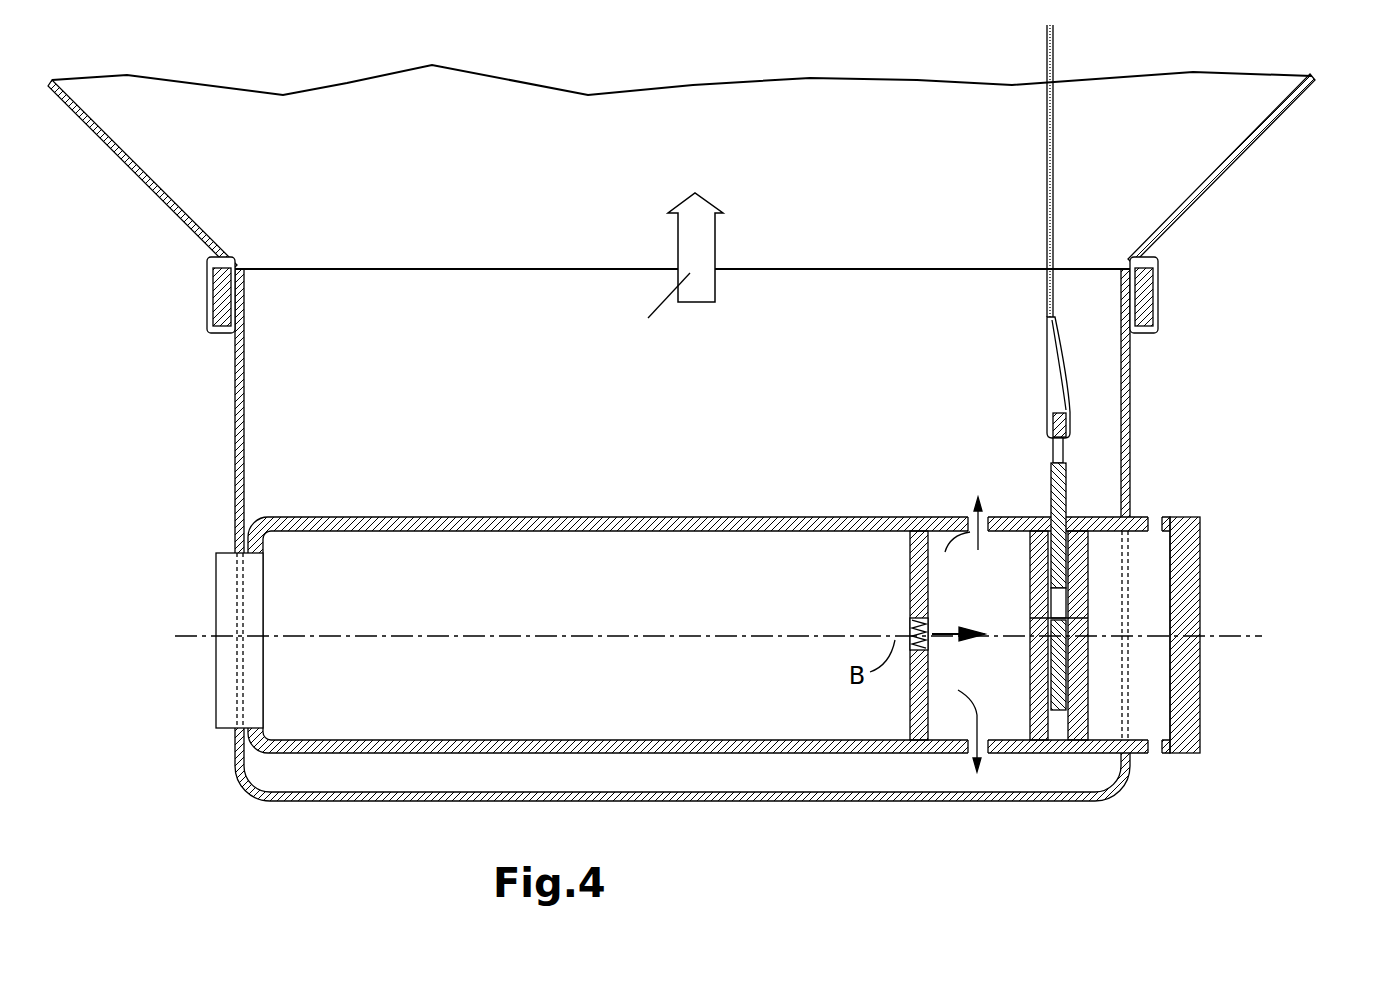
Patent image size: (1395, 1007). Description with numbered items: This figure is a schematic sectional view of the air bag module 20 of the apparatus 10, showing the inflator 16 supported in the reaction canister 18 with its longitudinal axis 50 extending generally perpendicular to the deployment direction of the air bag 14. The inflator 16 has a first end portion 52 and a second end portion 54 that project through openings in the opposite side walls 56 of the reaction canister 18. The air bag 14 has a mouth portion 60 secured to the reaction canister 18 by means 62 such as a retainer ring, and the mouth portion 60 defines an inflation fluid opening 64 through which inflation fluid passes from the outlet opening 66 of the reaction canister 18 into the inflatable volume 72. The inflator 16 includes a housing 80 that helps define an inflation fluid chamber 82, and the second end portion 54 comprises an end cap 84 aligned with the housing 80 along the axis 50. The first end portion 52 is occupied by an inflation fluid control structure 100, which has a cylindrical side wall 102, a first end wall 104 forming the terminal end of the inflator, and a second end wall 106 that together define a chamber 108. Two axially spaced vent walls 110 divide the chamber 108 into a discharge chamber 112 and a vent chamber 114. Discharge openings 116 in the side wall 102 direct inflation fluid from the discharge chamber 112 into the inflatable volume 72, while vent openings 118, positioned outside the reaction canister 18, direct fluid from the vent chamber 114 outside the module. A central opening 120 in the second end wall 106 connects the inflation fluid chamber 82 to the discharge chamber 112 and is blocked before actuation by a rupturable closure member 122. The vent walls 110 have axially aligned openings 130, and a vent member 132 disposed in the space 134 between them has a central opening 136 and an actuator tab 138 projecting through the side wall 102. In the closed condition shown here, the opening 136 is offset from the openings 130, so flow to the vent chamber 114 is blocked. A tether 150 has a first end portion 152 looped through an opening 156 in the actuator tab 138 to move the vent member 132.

The apparatus 10 is at (1273, 239).
The air bag 14 is at (162, 193).
The inflator 16 is at (511, 471).
The reaction canister 18 is at (235, 420).
The air bag module 20 is at (1310, 277).
The longitudinal axis 50 is at (182, 642).
The first end portion 52 is at (1189, 787).
The second end portion 54 is at (294, 497).
The side walls 56 is at (235, 470).
The mouth portion 60 is at (222, 250).
The means 62 is at (207, 302).
The inflation fluid opening 64 is at (606, 266).
The outlet opening 66 is at (417, 293).
The inflatable volume 72 is at (557, 214).
The housing 80 is at (640, 525).
The inflation fluid chamber 82 is at (612, 601).
The end cap 84 is at (224, 708).
The inflation fluid control structure 100 is at (1243, 787).
The cylindrical side wall 102 is at (920, 515).
The first end wall 104 is at (1185, 657).
The second end wall 106 is at (910, 700).
The chamber 108 is at (1155, 559).
The vent walls 110 is at (1082, 718).
The discharge chamber 112 is at (1008, 713).
The vent chamber 114 is at (1150, 677).
The discharge openings 116 is at (965, 515).
The vent openings 118 is at (1155, 518).
The central opening 120 is at (930, 628).
The rupturable closure member 122 is at (905, 622).
The openings 130 is at (1080, 645).
The vent member 132 is at (1068, 560).
The space 134 is at (1050, 668).
The central opening 136 is at (1052, 600).
The actuator tab 138 is at (1053, 490).
The tether 150 is at (1045, 240).
The first end portion 152 is at (1048, 412).
The opening 156 is at (1053, 458).